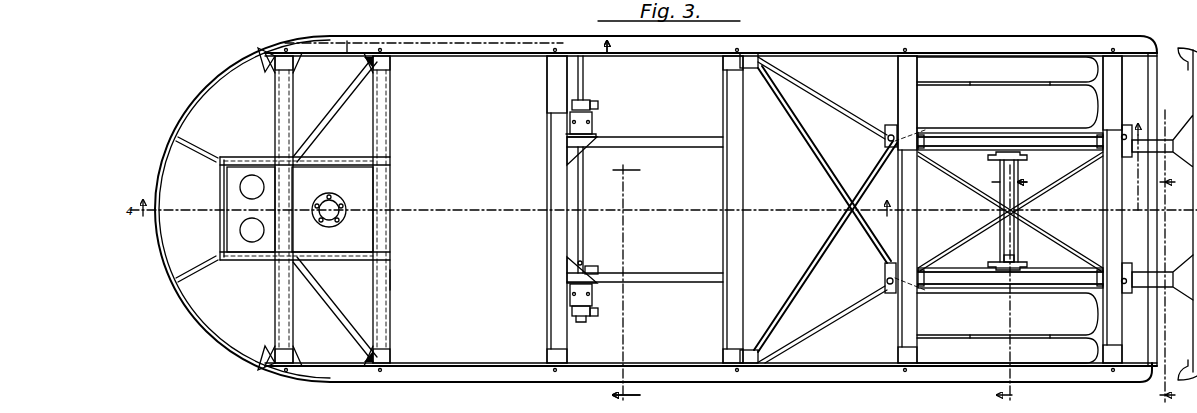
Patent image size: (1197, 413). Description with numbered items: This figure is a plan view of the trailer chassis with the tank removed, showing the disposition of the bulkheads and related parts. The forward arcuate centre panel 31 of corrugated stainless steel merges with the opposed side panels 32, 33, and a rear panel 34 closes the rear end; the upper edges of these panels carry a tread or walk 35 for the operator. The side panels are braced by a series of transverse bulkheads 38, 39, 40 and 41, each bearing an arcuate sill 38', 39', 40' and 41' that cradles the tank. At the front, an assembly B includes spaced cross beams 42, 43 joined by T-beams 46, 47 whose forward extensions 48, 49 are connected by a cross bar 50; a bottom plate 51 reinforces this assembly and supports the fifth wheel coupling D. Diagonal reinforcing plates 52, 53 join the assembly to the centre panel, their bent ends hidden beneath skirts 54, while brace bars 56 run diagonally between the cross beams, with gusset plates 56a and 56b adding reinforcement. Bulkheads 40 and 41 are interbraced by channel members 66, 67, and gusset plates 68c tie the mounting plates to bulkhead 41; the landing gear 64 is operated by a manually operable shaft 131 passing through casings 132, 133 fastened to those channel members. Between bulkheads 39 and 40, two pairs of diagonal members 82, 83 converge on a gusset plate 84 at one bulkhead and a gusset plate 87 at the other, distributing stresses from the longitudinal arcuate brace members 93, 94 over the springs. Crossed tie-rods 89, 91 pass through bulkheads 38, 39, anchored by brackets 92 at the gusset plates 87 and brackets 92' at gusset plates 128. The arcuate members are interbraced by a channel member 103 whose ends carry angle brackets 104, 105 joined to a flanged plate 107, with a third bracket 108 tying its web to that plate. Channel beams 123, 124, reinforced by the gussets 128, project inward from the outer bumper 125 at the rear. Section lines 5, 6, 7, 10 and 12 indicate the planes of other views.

The section line 5- 5 is at (1012, 283).
The section line 6- 6 is at (1004, 171).
The section line 7- 7 is at (1171, 256).
The direction arrow / front reference 10 is at (353, 71).
The section line 12- 12 is at (631, 283).
The centre panel 31 is at (192, 318).
The side panel 32 is at (466, 383).
The side panel 33 is at (449, 35).
The rear panel 34 is at (1155, 111).
The tread or walk 35 is at (807, 41).
The bulkhead 38 is at (1096, 209).
The arcuate sill 38' is at (1085, 237).
The bulkhead 39 is at (889, 209).
The arcuate sill 39' is at (890, 248).
The bulkhead 40 is at (745, 209).
The arcuate sill 40' is at (750, 209).
The bulkhead 41 is at (538, 209).
The arcuate sill 41' is at (527, 231).
The cross beam 42 is at (392, 297).
The cross beam 43 is at (288, 318).
The T-beam 46 is at (333, 262).
The T-beam 47 is at (343, 156).
The forward extension 48 is at (247, 156).
The forward extension 49 is at (250, 262).
The cross bar 50 is at (221, 229).
The bottom plate 51 is at (366, 193).
The reinforcing plate 52 is at (204, 147).
The reinforcing plate 53 is at (203, 270).
The skirt or moulding 54 is at (168, 134).
The brace bar 56 is at (340, 108).
The gusset plate 56a is at (370, 70).
The gusset plate 56b is at (270, 52).
The landing gear 64 is at (597, 264).
The channel member 66 is at (666, 137).
The channel member 67 is at (675, 265).
The gusset plate 68c is at (567, 150).
The diagonal member 82 is at (800, 141).
The diagonal member 83 is at (822, 97).
The gusset plate 84 is at (752, 53).
The gusset plate 87 is at (891, 122).
The tie-rod 89 is at (1010, 211).
The tie-rod 91 is at (1073, 176).
The bracket 92 is at (882, 210).
The bracket 92' is at (1132, 191).
The arcuate brace member 93 is at (955, 150).
The arcuate brace member 94 is at (968, 294).
The arcuate cross channel member 103 is at (1000, 250).
The angle bracket 104 is at (1000, 173).
The angle bracket 105 is at (1020, 162).
The flanged plate 107 is at (1027, 268).
The third bracket 108 is at (1018, 259).
The channel beam 123 is at (1165, 140).
The channel beam 124 is at (1160, 286).
The bumper 125 is at (1186, 230).
The gusset plate 128 is at (1127, 158).
The manually operable shaft 131 is at (586, 88).
The casing 132 is at (596, 118).
The casing 133 is at (593, 297).
The bracing assembly B is at (392, 279).
The fifth wheel coupling assembly D is at (340, 192).